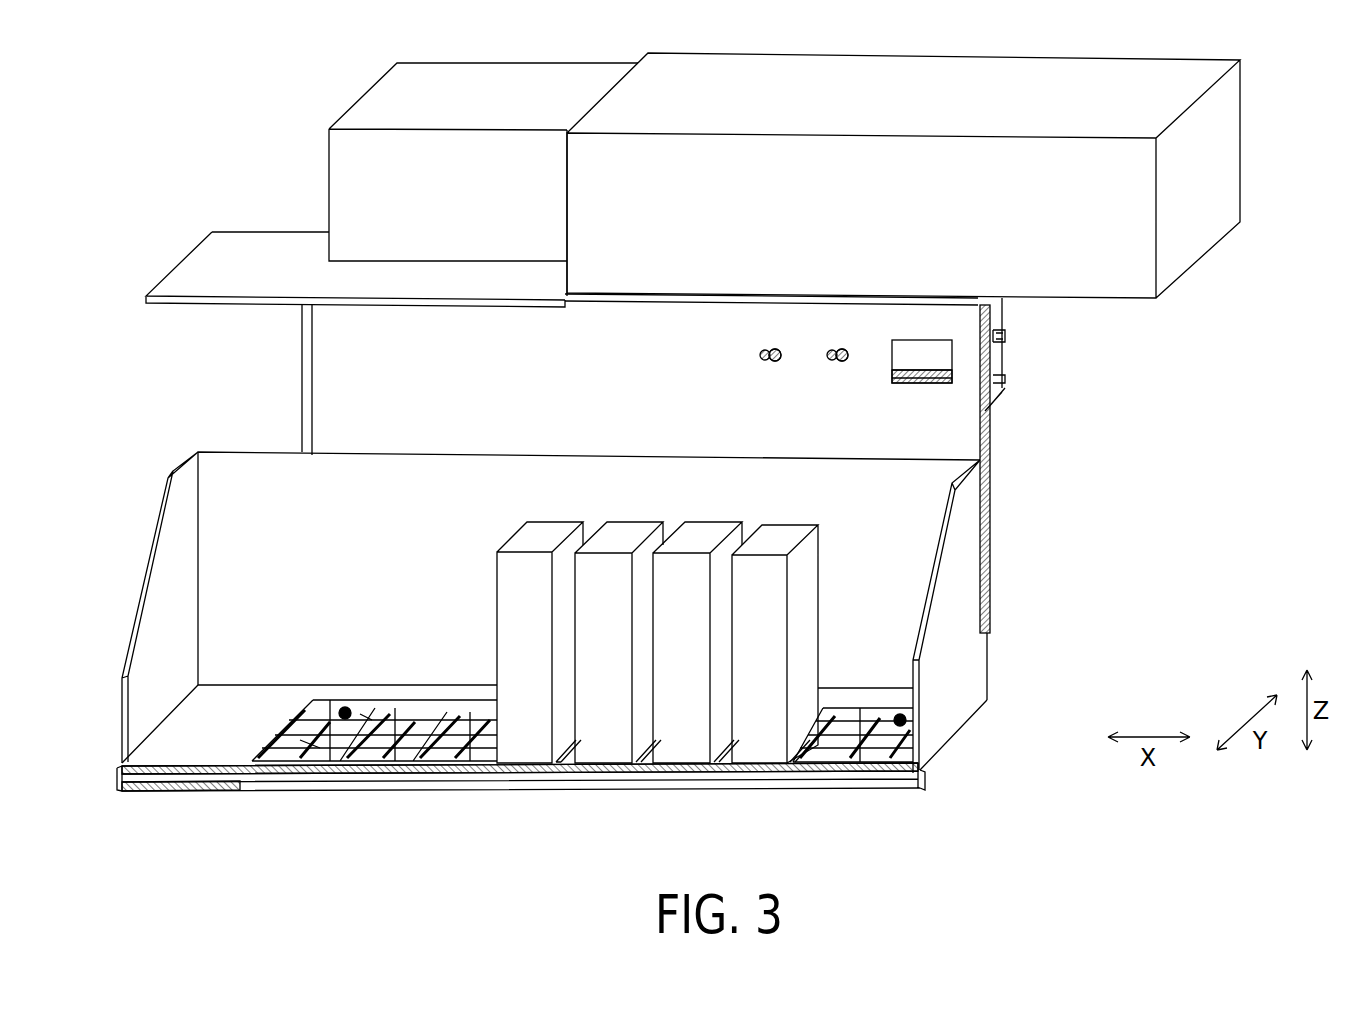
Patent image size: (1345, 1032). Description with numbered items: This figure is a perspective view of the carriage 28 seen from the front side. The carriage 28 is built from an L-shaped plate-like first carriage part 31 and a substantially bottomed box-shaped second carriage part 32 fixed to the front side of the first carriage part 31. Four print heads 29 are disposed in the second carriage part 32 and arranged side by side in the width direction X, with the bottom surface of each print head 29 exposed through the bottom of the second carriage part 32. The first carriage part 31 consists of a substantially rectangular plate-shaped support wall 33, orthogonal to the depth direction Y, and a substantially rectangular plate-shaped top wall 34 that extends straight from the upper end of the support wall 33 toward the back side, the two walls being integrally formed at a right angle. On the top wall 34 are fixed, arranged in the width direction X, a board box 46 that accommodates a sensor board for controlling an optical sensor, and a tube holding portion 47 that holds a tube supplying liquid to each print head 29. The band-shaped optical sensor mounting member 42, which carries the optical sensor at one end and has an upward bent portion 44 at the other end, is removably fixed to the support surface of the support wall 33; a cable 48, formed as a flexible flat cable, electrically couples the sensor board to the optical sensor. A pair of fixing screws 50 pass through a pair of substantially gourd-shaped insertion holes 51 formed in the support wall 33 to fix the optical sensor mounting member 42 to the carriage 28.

The carriage 28 is at (1049, 425).
The print head 29 is at (522, 742).
The first carriage part 31 is at (991, 430).
The second carriage part 32 is at (914, 538).
The support wall 33 is at (302, 378).
The top wall 34 is at (188, 306).
The optical sensor mounting member 42 is at (1006, 395).
The bent portion 44 is at (1006, 372).
The board box 46 is at (888, 70).
The tube holding portion 47 is at (497, 75).
The cable 48 is at (1006, 343).
The fixing screw 50 is at (757, 352).
The insertion hole 51 is at (779, 360).